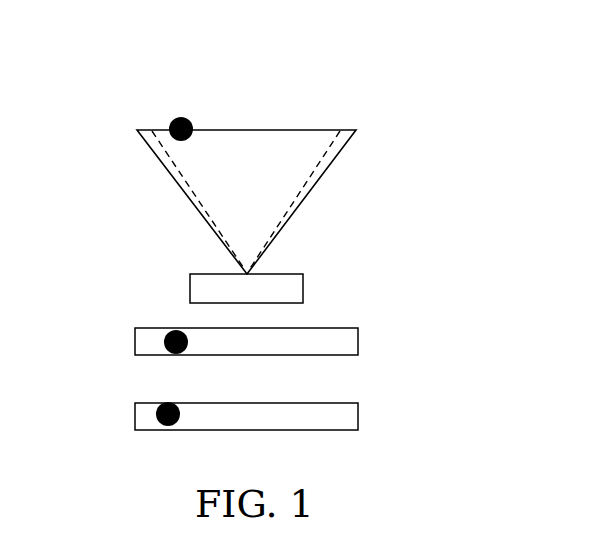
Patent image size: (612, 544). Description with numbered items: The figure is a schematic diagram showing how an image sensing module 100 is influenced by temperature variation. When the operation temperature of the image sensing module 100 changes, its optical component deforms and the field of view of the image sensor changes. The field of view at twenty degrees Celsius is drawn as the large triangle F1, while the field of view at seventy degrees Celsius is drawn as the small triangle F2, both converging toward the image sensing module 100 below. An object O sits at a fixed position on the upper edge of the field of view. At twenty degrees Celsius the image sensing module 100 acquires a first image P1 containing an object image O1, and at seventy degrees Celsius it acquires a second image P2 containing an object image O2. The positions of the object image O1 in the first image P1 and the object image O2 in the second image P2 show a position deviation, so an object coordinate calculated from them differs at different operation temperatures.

The object O is at (185, 120).
The object image O1 is at (173, 331).
The object image O2 is at (165, 403).
The large triangle F1 is at (339, 153).
The small triangle F2 is at (312, 188).
The image sensing module 100 is at (303, 289).
The first image P1 is at (358, 340).
The second image P2 is at (358, 415).